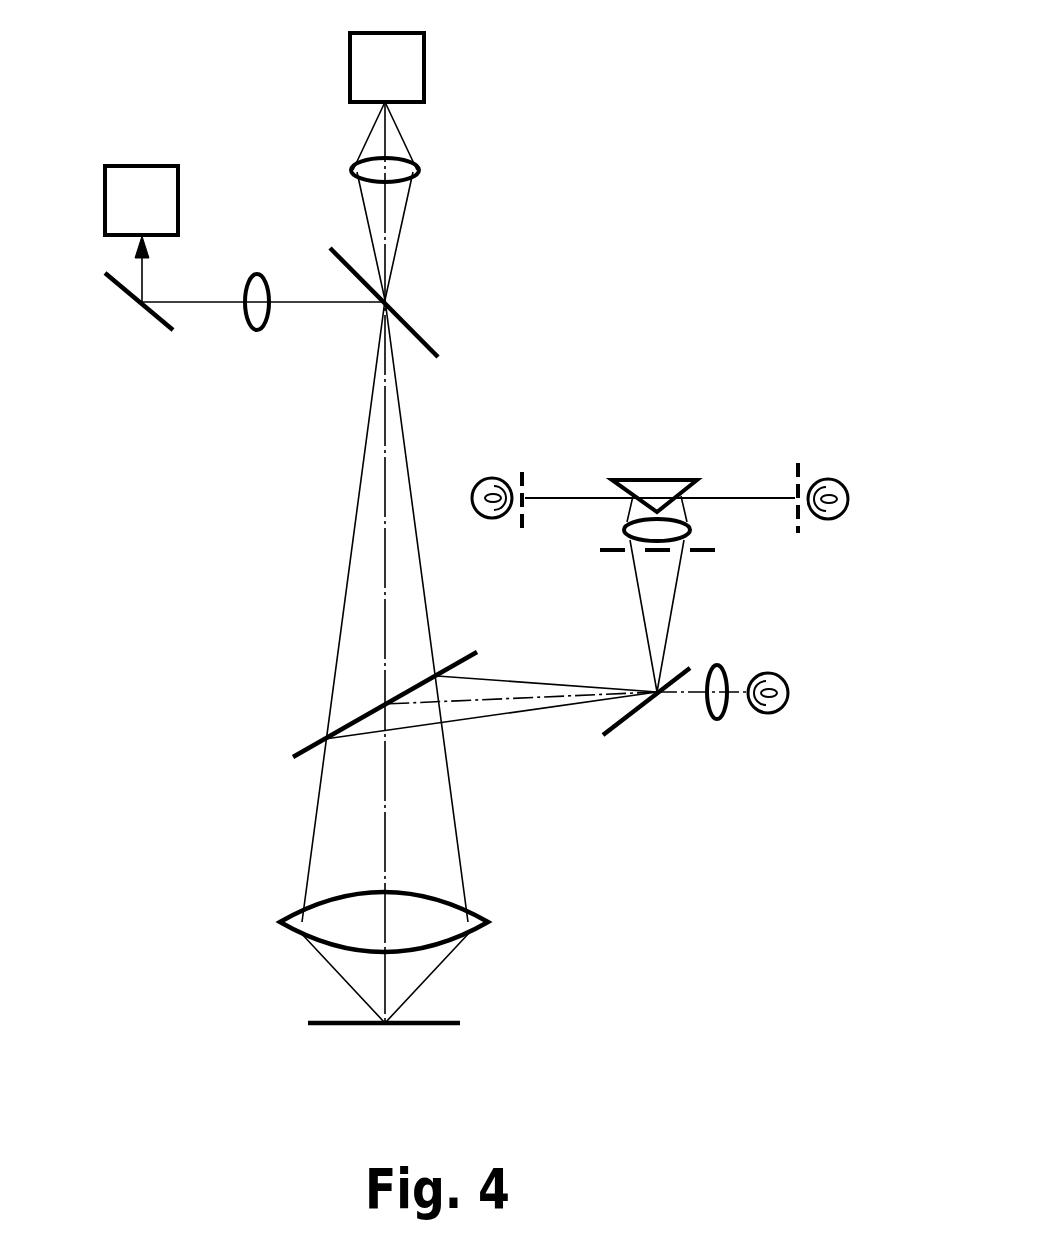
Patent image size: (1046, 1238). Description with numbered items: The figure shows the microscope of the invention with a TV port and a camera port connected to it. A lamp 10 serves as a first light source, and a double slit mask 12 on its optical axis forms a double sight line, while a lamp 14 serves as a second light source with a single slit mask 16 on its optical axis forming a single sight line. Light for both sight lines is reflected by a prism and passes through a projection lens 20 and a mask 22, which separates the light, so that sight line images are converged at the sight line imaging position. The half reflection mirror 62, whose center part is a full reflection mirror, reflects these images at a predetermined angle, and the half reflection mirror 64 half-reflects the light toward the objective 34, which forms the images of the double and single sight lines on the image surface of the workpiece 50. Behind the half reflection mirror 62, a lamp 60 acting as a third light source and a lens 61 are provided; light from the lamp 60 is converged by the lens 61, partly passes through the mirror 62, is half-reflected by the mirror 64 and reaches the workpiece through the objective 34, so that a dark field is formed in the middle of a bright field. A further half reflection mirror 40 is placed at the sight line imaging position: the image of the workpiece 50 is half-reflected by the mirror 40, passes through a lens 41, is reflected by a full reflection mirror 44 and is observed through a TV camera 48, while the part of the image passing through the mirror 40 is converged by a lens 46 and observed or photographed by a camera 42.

The lamp 10 is at (485, 481).
The double slit mask 12 is at (525, 483).
The lamp 14 is at (848, 488).
The single slit mask 16 is at (802, 480).
The projection lens 20 is at (693, 527).
The mask 22 is at (708, 553).
The objective 34 is at (486, 918).
The half reflection mirror 40 is at (428, 338).
The lens 41 is at (245, 330).
The camera 42 is at (424, 65).
The full reflection mirror 44 is at (122, 292).
The lens 46 is at (420, 170).
The TV camera 48 is at (122, 163).
The workpiece 50 is at (460, 1025).
The lamp 60 is at (790, 705).
The lens 61 is at (707, 712).
The half reflection mirror 62 is at (623, 723).
The half reflection mirror 64 is at (322, 740).